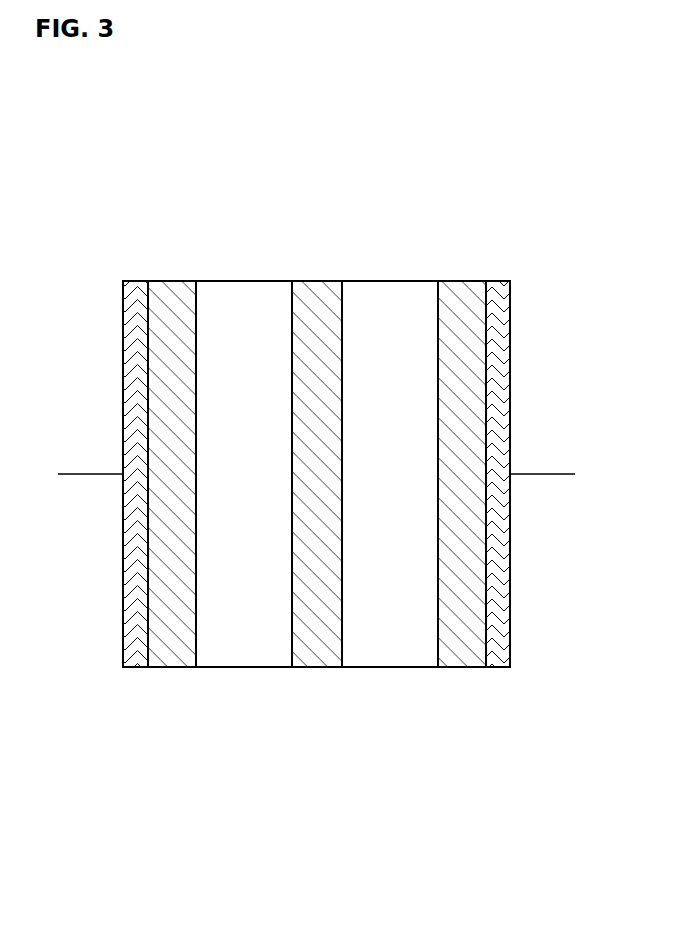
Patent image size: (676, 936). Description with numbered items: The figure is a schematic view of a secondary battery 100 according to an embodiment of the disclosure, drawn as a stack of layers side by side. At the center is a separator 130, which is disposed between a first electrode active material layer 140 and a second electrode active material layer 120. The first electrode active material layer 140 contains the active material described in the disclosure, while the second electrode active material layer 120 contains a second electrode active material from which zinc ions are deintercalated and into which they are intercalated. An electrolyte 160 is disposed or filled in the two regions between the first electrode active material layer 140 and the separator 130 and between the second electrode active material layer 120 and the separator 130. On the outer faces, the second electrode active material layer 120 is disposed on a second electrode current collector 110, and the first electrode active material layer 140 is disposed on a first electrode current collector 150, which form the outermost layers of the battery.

The secondary battery 100 is at (478, 252).
The second electrode current collector 110 is at (135, 667).
The second electrode active material layer 120 is at (173, 667).
The separator 130 is at (318, 667).
The first electrode active material layer 140 is at (455, 667).
The first electrode current collector 150 is at (498, 667).
The electrolyte 160 is at (247, 667).